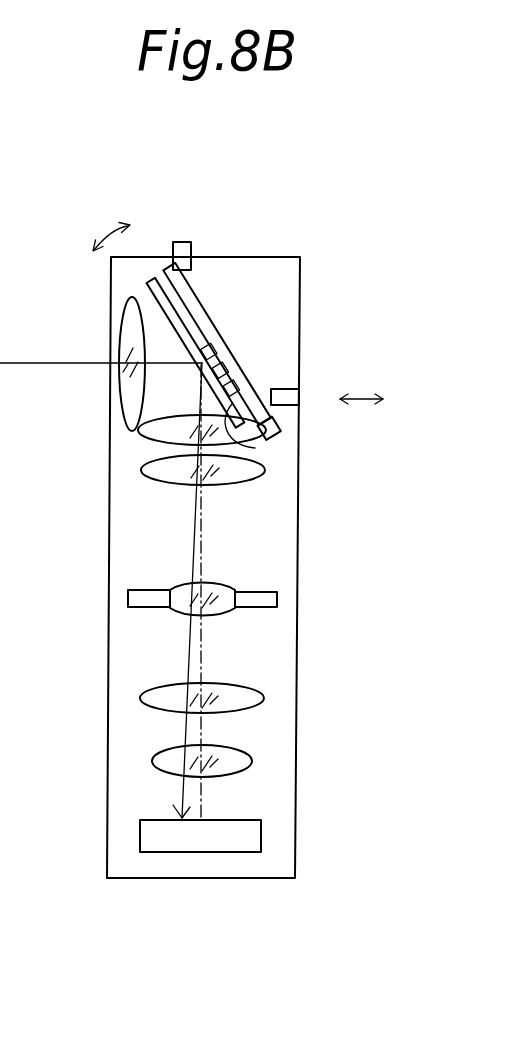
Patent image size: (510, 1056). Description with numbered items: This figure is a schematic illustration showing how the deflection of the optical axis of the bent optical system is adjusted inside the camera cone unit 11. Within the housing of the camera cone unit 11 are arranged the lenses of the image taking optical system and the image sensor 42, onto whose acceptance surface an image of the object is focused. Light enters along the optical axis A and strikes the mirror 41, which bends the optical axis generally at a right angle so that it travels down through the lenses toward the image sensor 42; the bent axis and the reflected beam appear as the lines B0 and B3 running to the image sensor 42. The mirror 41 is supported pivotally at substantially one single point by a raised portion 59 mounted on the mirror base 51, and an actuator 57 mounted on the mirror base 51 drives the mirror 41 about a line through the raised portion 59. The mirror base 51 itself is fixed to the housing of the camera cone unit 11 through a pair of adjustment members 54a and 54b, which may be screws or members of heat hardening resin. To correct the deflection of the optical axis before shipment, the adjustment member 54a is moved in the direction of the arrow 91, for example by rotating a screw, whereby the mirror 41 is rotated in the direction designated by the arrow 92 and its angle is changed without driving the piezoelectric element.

The camera cone unit 11 is at (190, 878).
The optical axis A is at (33, 363).
The adjustment member 54a is at (186, 242).
The mirror base 51 is at (205, 302).
The raised portion 59 is at (218, 344).
The actuator 57 is at (237, 379).
The adjustment member 54b is at (287, 388).
The arrow 91 is at (360, 402).
The arrow 92 is at (112, 232).
The mirror 41 is at (255, 448).
The optical axis B0 is at (202, 552).
The reflected light beam B3 is at (192, 648).
The image sensor 42 is at (243, 820).